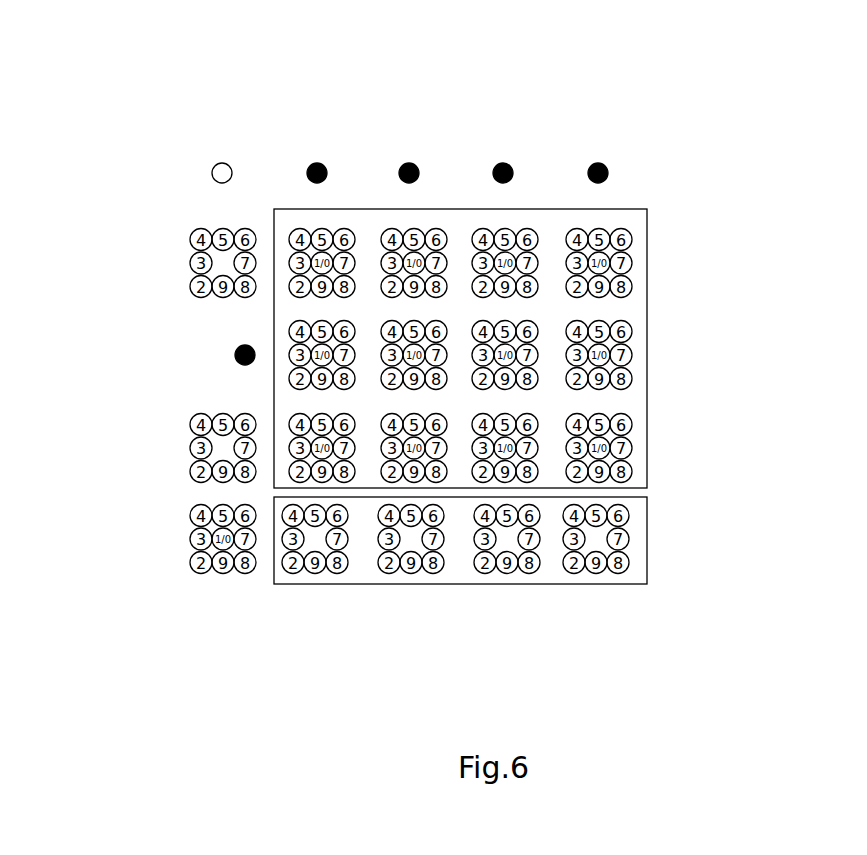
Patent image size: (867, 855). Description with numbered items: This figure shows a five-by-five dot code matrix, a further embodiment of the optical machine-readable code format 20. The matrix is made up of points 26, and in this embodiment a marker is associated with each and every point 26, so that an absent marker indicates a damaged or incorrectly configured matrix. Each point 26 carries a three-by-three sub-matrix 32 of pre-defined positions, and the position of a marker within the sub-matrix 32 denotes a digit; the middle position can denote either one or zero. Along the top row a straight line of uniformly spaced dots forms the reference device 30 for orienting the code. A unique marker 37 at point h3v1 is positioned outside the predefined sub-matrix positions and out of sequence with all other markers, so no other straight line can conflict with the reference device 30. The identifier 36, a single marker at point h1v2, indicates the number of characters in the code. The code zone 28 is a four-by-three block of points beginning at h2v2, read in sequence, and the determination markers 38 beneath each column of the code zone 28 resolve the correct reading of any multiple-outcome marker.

The code format 20 is at (692, 118).
The points 26 is at (603, 357).
The code zone 28 is at (633, 400).
The reference device 30 is at (446, 119).
The sub-matrix 32 is at (293, 297).
The identifier 36 is at (557, 573).
The unique marker 37 is at (240, 356).
The determination markers 38 is at (400, 573).